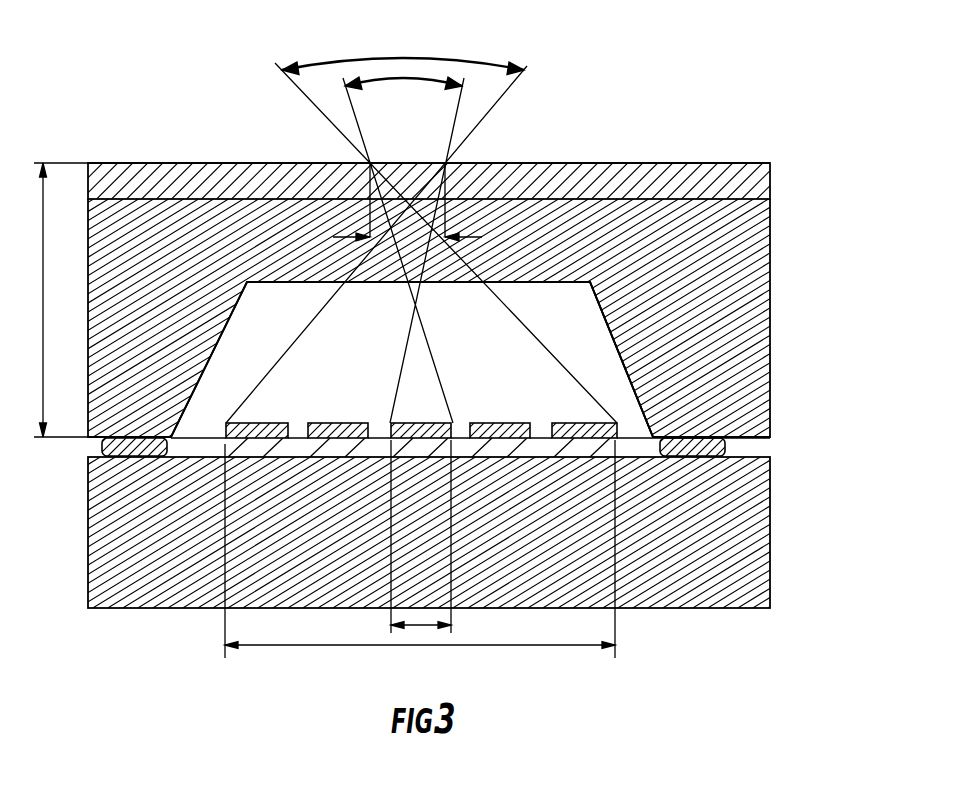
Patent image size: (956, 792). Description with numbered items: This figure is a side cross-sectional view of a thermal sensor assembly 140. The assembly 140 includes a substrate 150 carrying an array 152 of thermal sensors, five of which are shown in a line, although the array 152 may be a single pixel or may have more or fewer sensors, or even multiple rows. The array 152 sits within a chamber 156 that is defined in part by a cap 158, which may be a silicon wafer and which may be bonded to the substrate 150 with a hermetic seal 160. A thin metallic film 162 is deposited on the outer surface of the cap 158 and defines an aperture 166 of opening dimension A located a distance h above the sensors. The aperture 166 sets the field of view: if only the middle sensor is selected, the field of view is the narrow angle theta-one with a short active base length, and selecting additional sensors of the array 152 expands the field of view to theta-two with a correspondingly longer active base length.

The thermal sensor assembly 140 is at (768, 132).
The substrate 150 is at (770, 537).
The array 152 is at (340, 345).
The chamber 156 is at (612, 338).
The cap 158 is at (770, 261).
The hermetic seal 160 is at (725, 447).
The thin metallic film 162 is at (770, 183).
The aperture 166 is at (427, 163).